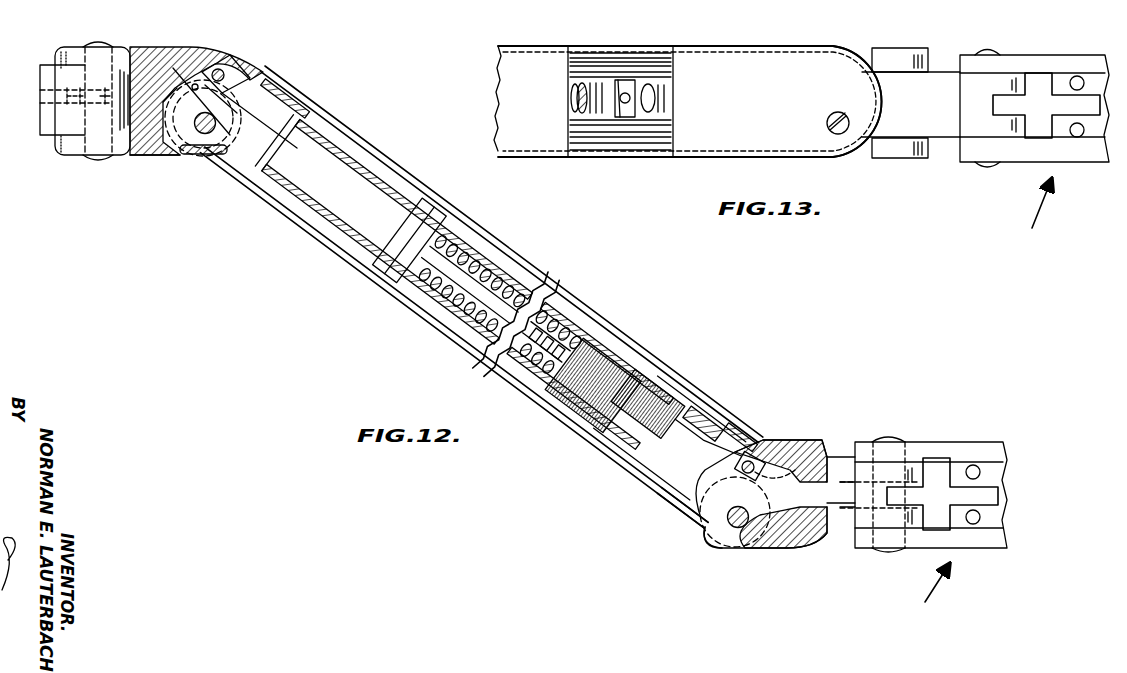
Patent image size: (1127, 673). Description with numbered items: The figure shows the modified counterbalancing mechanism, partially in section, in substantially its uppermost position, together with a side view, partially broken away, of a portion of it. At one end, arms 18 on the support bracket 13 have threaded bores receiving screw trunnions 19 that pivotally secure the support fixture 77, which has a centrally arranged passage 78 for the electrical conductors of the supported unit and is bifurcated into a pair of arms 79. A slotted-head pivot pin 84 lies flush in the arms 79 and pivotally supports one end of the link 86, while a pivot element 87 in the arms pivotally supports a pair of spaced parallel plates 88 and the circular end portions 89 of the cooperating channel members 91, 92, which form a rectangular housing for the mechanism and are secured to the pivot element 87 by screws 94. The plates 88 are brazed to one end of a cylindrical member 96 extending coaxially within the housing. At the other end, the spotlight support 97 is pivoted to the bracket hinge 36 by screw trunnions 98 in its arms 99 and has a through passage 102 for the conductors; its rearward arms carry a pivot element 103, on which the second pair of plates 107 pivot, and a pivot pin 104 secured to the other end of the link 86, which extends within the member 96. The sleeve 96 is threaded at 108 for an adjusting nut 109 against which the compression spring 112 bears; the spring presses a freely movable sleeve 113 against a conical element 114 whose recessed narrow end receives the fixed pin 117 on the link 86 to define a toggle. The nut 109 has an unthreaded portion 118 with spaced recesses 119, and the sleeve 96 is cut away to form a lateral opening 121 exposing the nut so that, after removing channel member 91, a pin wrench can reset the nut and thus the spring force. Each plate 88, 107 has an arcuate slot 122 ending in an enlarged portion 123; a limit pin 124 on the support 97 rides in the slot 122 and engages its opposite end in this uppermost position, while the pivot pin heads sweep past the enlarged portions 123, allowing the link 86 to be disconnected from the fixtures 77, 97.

In FIG. 12, the support bracket 13 is at (929, 596).
In FIG. 13, the support bracket 13 is at (1035, 217).
In FIG. 12, the arms 18 is at (940, 446).
In FIG. 13, the arms 18 is at (1010, 62).
In FIG. 12, the screw trunnions 19 is at (893, 440).
In FIG. 13, the screw trunnions 19 is at (990, 167).
In FIG. 12, the bracket hinge 36 is at (42, 125).
In FIG. 12, the support fixture 77 is at (800, 446).
In FIG. 13, the support fixture 77 is at (905, 60).
In FIG. 12, the passage 78 is at (833, 482).
In FIG. 12, the arms 79 is at (702, 526).
In FIG. 12, the pivot pin 84 is at (742, 466).
In FIG. 12, the link 86 is at (305, 118).
In FIG. 12, the pivot element 87 is at (716, 545).
In FIG. 12, the spaced parallel plates 88 is at (673, 483).
In FIG. 12, the circular end portions 89 is at (794, 545).
In FIG. 13, the circular end portions 89 is at (873, 103).
In FIG. 13, the channel member 91 is at (750, 46).
In FIG. 12, the channel member 92 is at (567, 293).
In FIG. 13, the screws 94 is at (826, 124).
In FIG. 12, the cylindrical member 96 is at (676, 400).
In FIG. 13, the cylindrical member 96 is at (632, 65).
In FIG. 12, the spotlight support 97 is at (160, 60).
In FIG. 12, the screw trunnions 98 is at (100, 44).
In FIG. 12, the arms 99 is at (72, 143).
In FIG. 12, the through passage 102 is at (175, 150).
In FIG. 12, the pivot element 103 is at (214, 132).
In FIG. 12, the pivot pin 104 is at (225, 75).
In FIG. 12, the plates 107 is at (245, 172).
In FIG. 12, the threaded portion 108 is at (648, 389).
In FIG. 12, the adjusting nut 109 is at (580, 416).
In FIG. 13, the adjusting nut 109 is at (650, 115).
In FIG. 12, the compression spring 112 is at (486, 259).
In FIG. 13, the compression spring 112 is at (580, 95).
In FIG. 12, the freely movable sleeve 113 is at (442, 232).
In FIG. 12, the conical element 114 is at (317, 227).
In FIG. 12, the fixed pin 117 is at (326, 142).
In FIG. 12, the unthreaded portion 118 is at (598, 350).
In FIG. 13, the unthreaded portion 118 is at (622, 117).
In FIG. 13, the recesses 119 is at (627, 85).
In FIG. 13, the lateral opening 121 is at (576, 108).
In FIG. 12, the arcuate slot 122 is at (745, 503).
In FIG. 12, the enlarged portion 123 is at (280, 93).
In FIG. 12, the limit pin 124 is at (196, 83).